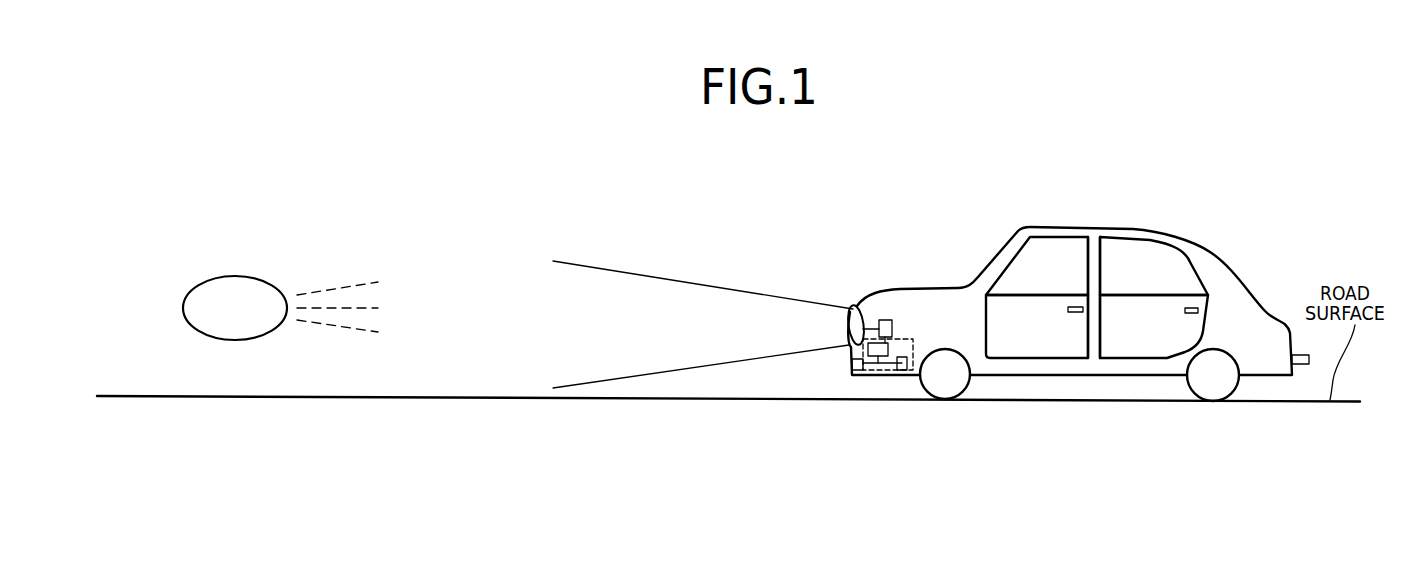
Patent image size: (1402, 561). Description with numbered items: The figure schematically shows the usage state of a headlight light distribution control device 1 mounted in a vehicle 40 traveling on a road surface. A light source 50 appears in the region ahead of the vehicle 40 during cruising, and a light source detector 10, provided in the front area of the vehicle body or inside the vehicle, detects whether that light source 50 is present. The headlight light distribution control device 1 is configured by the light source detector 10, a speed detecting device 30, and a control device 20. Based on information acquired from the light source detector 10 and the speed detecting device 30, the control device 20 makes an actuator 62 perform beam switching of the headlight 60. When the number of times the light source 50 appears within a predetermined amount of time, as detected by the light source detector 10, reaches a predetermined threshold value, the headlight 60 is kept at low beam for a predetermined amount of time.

The headlight light distribution control device 1 is at (878, 375).
The light source detector 10 is at (855, 371).
The control device 20 is at (913, 347).
The speed detecting device 30 is at (902, 371).
The vehicle 40 is at (1087, 227).
The light source 50 is at (232, 275).
The headlight 60 is at (857, 310).
The actuator 62 is at (888, 320).